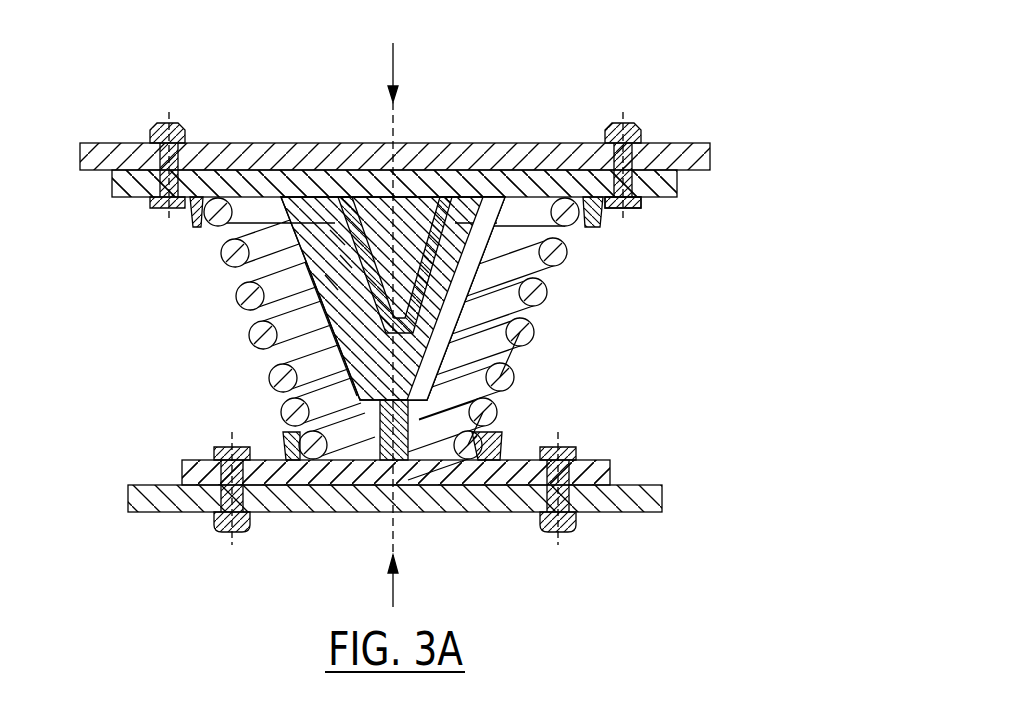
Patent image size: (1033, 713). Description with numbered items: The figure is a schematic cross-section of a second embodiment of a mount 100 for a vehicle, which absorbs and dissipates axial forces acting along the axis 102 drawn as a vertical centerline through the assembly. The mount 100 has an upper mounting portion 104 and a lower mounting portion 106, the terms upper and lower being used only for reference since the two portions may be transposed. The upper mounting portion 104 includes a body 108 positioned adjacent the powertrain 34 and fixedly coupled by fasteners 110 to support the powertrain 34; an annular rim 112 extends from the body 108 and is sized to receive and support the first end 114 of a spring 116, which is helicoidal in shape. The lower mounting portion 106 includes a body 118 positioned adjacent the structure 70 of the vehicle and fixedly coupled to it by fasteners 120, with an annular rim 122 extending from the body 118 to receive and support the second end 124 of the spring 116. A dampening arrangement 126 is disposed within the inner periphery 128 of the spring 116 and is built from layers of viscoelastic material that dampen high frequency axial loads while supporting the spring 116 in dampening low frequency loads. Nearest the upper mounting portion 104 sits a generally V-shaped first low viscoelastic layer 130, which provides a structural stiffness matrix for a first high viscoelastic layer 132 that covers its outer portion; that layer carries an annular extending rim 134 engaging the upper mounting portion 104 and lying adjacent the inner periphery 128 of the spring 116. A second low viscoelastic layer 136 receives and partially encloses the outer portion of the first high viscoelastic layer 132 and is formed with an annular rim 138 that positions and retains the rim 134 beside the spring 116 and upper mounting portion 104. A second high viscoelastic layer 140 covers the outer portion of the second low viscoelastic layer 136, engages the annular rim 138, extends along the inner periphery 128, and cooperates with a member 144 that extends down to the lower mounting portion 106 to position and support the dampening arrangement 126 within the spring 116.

The mount 100 is at (738, 82).
The axis 102 is at (391, 72).
The powertrain 34 is at (722, 157).
The upper mounting portion 104 is at (692, 184).
The body 108 is at (530, 186).
The fasteners 110 is at (163, 162).
The annular rim 112 is at (603, 215).
The first end 114 is at (594, 200).
The spring 116 is at (543, 297).
The inner periphery 128 is at (517, 335).
The first low viscoelastic layer 130 is at (360, 215).
The annular extending rim 134 is at (436, 212).
The annular rim 138 is at (296, 245).
The first high viscoelastic layer 132 is at (345, 240).
The second low viscoelastic layer 136 is at (348, 262).
The second high viscoelastic layer 140 is at (335, 282).
The dampening arrangement 126 is at (312, 318).
The member 144 is at (403, 432).
The annular rim 122 is at (501, 440).
The second end 124 is at (480, 458).
The body 118 is at (370, 480).
The lower mounting portion 106 is at (632, 466).
The structure 70 is at (680, 500).
The fasteners 120 is at (576, 454).